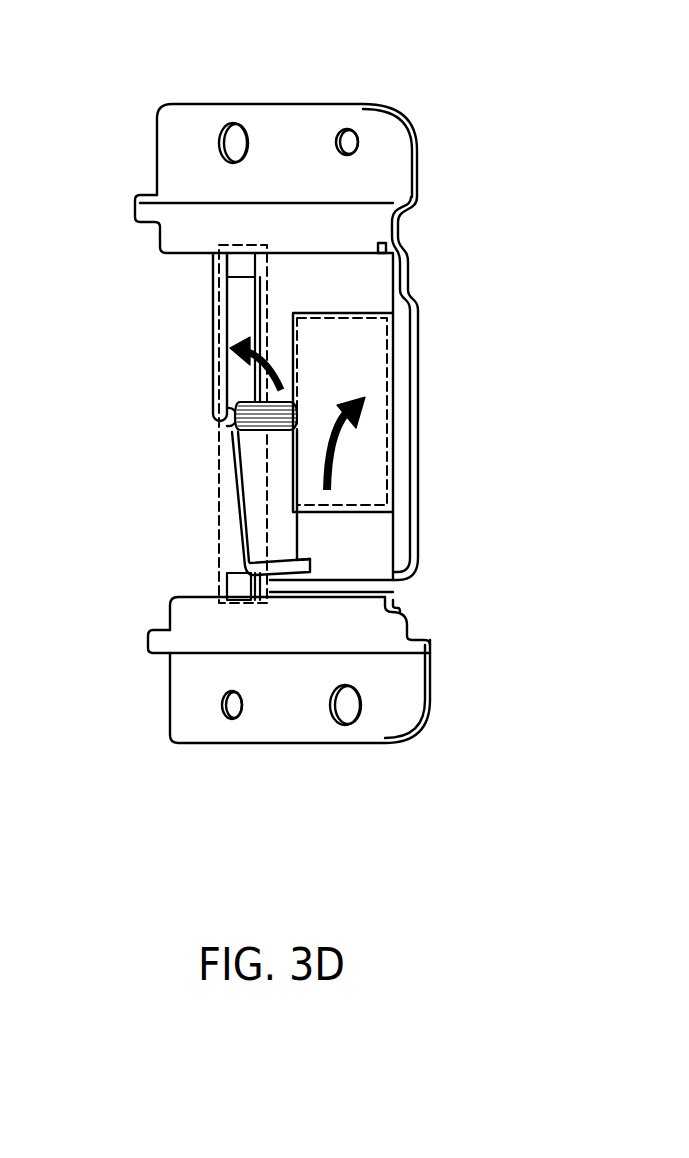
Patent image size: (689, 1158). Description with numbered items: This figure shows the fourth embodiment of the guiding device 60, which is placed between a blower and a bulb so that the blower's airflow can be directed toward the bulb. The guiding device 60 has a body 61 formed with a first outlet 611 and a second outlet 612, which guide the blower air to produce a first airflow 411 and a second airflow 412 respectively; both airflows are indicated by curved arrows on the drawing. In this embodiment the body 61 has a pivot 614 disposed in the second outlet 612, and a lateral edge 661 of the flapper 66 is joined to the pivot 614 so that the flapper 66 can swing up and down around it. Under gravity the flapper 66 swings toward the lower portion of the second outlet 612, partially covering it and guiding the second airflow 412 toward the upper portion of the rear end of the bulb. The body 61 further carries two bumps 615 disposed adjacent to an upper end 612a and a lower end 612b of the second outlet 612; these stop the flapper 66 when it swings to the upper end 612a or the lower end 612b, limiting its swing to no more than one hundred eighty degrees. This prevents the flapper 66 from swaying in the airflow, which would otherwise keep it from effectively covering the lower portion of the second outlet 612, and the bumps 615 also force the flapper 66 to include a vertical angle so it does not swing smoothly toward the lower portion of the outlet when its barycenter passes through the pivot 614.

The guiding device 60 is at (279, 48).
The body 61 is at (368, 118).
The first outlet 611 is at (387, 325).
The second outlet 612 is at (268, 272).
The upper end of the second outlet 612a is at (243, 248).
The lower end of the second outlet 612b is at (240, 597).
The pivot 614 is at (223, 420).
The bumps 615 is at (237, 267).
The flapper 66 is at (232, 510).
The lateral edge of the flapper 661 is at (255, 410).
The first airflow 411 is at (363, 400).
The second airflow 412 is at (233, 350).